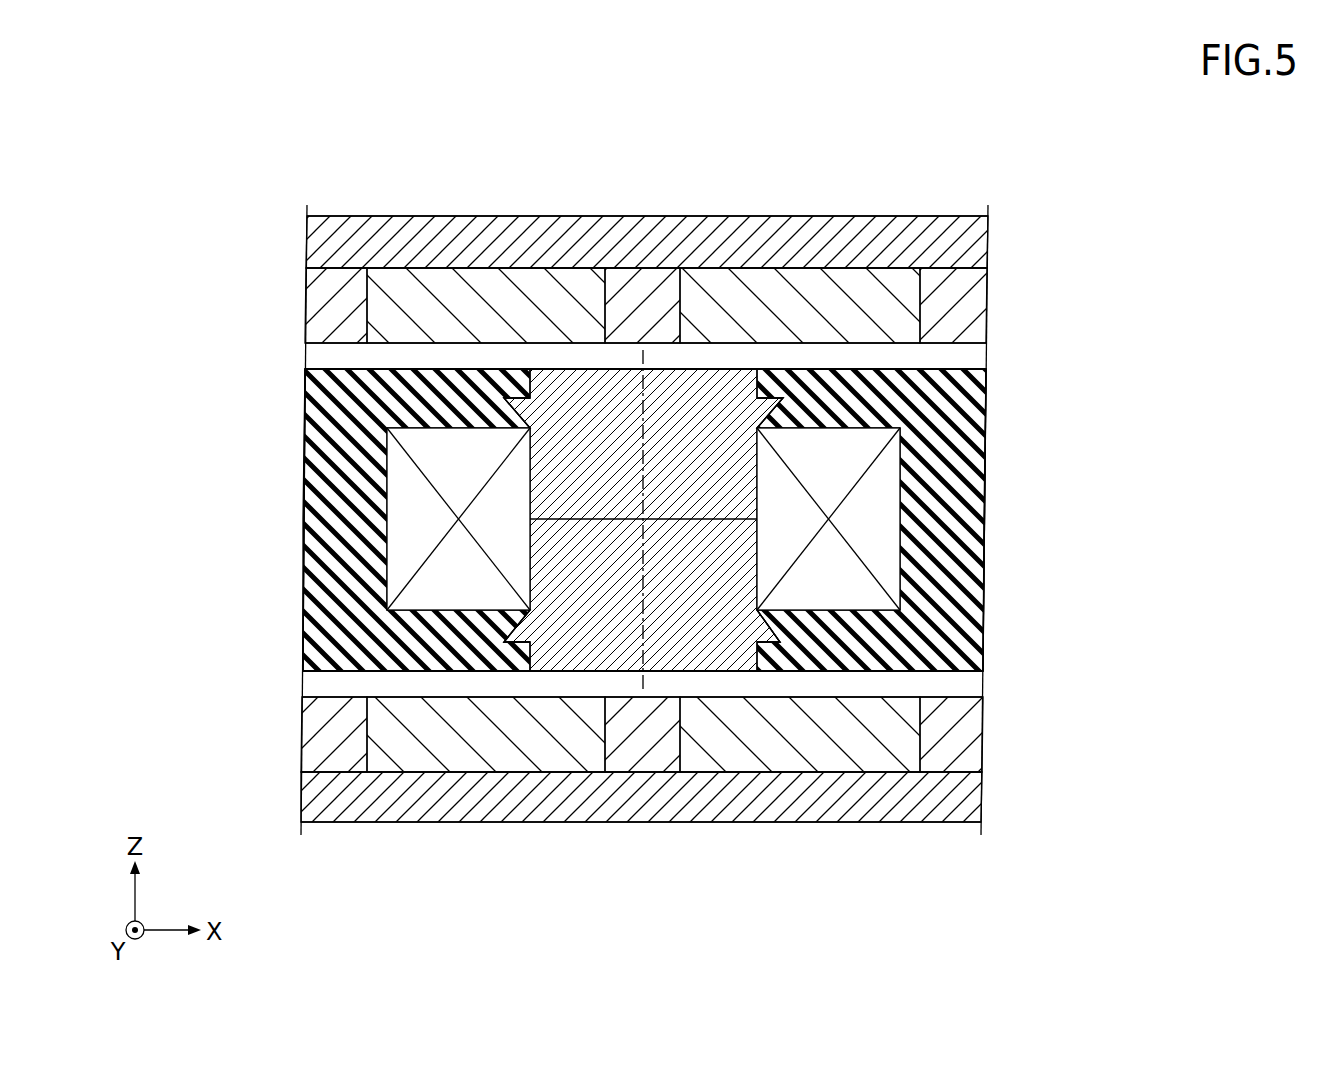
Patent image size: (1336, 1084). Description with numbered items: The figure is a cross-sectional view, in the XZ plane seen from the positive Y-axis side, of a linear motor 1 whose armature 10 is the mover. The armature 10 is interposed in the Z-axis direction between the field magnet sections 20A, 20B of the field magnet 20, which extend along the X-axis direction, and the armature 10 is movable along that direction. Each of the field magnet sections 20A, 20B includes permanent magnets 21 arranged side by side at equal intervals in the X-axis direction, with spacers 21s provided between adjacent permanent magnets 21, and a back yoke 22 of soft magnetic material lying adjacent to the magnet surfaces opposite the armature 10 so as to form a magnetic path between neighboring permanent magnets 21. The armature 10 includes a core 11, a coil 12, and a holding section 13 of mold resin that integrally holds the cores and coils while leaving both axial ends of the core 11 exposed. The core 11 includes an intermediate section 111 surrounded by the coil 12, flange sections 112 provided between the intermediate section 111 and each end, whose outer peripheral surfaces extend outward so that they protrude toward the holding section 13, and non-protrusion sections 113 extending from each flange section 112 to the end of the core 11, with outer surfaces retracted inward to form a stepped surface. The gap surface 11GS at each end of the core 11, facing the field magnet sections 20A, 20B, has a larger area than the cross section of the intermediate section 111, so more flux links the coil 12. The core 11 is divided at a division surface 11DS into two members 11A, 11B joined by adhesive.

The linear motor 1 is at (122, 117).
The armature 10 is at (322, 358).
The core 11 is at (150, 470).
The member 11A is at (548, 481).
The member 11B is at (548, 556).
The division surface 11DS is at (595, 508).
The gap surface 11GS is at (570, 352).
The coil 12 is at (760, 585).
The holding section 13 is at (441, 652).
The field magnet 20 is at (1167, 318).
The field magnet section 20A is at (1020, 288).
The field magnet section 20B is at (1020, 754).
The permanent magnet 21 is at (478, 278).
The spacer 21s is at (326, 280).
The back yoke 22 is at (875, 232).
The intermediate section 111 is at (748, 483).
The flange section 112 is at (770, 405).
The non-protrusion section 113 is at (760, 378).